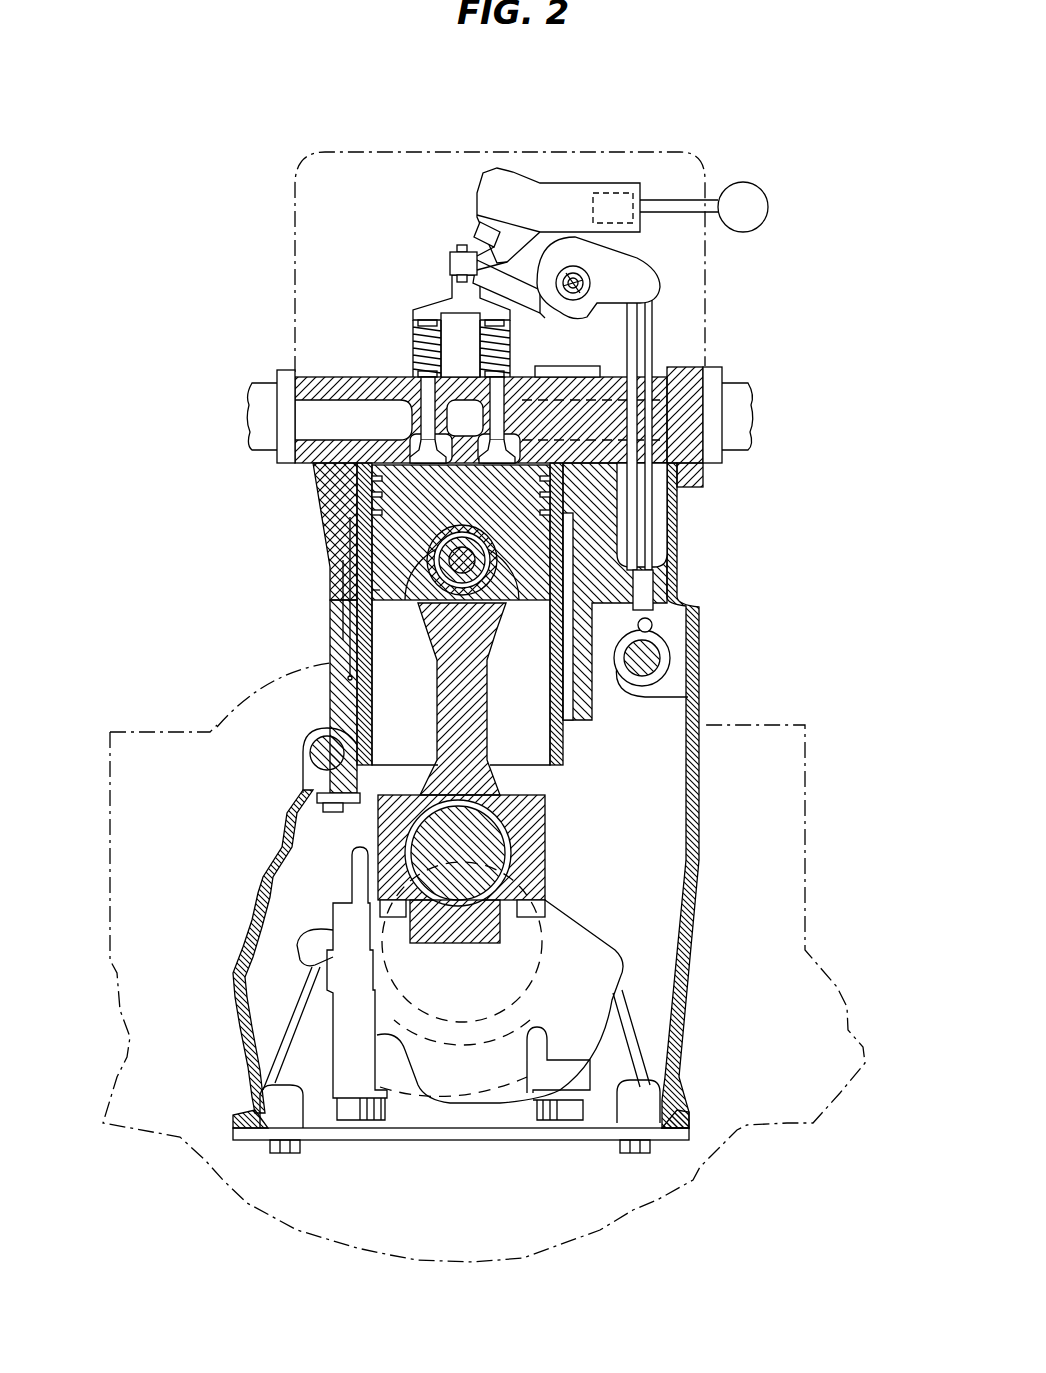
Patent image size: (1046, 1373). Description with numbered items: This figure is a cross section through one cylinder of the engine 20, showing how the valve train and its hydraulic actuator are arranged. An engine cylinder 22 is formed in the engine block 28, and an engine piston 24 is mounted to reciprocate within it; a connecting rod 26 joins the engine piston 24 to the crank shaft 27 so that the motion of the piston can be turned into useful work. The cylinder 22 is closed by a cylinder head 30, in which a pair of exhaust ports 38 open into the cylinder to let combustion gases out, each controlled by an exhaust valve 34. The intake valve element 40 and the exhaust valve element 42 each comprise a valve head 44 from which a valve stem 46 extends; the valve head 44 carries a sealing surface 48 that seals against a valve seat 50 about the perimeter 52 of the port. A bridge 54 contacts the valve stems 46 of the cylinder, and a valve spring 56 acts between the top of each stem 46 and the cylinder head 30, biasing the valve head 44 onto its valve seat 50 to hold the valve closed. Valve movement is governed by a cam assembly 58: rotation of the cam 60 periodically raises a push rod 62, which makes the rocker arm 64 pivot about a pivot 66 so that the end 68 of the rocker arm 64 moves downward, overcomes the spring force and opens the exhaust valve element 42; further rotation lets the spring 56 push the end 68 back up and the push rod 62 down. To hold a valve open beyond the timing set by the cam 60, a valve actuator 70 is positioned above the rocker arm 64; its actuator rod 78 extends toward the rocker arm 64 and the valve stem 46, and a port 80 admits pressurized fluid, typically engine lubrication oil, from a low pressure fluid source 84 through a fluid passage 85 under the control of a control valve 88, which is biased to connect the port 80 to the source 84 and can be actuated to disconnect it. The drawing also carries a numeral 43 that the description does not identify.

The engine 20 is at (707, 556).
The engine cylinder 22 is at (370, 667).
The engine piston 24 is at (323, 633).
The connecting rod 26 is at (477, 730).
The crank shaft 27 is at (590, 930).
The engine block 28 is at (330, 712).
The cylinder head 30 is at (703, 462).
The exhaust valve 34 is at (523, 382).
The exhaust port 38 is at (565, 468).
The intake valve element 40 is at (408, 387).
The exhaust valve element 42 is at (757, 428).
The left shaft 43 is at (288, 403).
The valve head 44 is at (367, 513).
The valve stem 46 is at (535, 372).
The sealing surface 48 is at (363, 557).
The valve seat 50 is at (377, 592).
The perimeter 52 is at (363, 477).
The bridge 54 is at (447, 302).
The valve spring 56 is at (473, 335).
The cam assembly 58 is at (680, 288).
The cam 60 is at (660, 695).
The push rod 62 is at (653, 613).
The rocker arm 64 is at (610, 270).
The pivot 66 is at (578, 268).
The end of the rocker arm 68 is at (452, 250).
The valve actuator 70 is at (530, 172).
The actuator rod 78 is at (490, 233).
The port 80 is at (643, 198).
The low pressure fluid source 84 is at (745, 189).
The fluid passage 85 is at (561, 275).
The control valve 88 is at (617, 193).